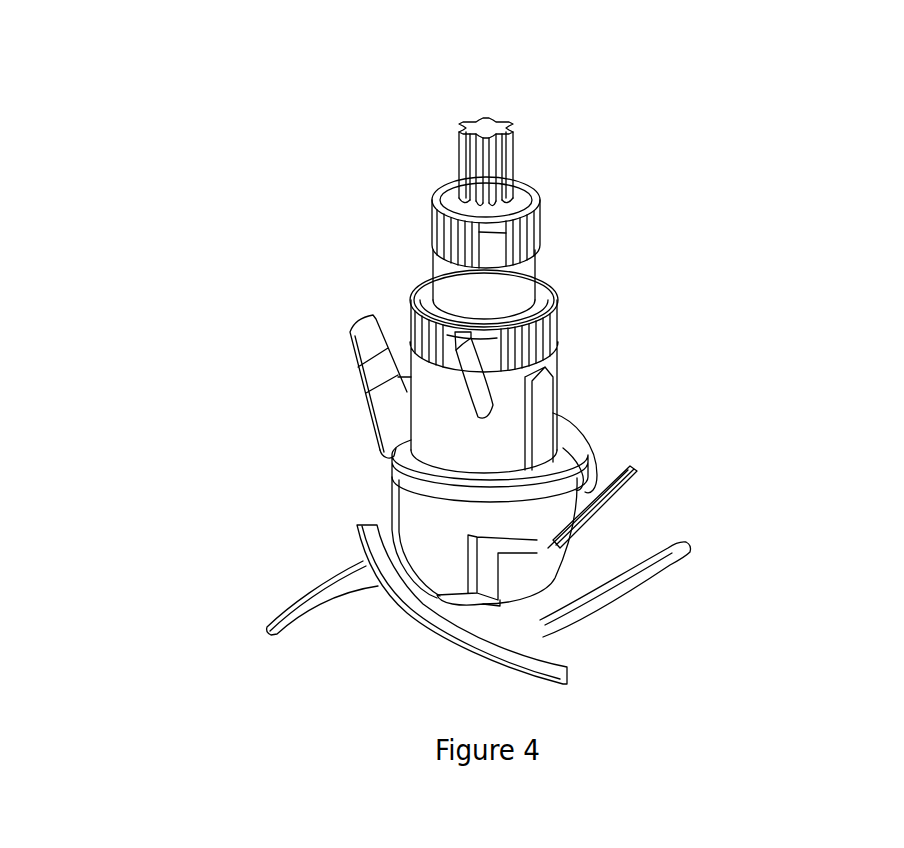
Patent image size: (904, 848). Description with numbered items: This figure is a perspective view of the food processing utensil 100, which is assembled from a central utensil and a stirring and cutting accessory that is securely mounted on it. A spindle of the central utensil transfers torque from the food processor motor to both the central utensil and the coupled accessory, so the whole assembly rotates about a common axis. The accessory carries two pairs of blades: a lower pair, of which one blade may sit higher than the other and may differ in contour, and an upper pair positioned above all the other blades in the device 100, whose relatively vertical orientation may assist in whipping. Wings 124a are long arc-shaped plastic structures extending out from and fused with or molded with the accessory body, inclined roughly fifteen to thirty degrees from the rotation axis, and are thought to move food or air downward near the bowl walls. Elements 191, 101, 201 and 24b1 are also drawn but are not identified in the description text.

The food processing utensil 100 is at (566, 126).
The drive shaft 191 is at (477, 155).
The coupling 101 is at (414, 237).
The knurled ring 201 is at (567, 321).
The wing 124a is at (472, 393).
The guide tab 24b1 is at (537, 398).